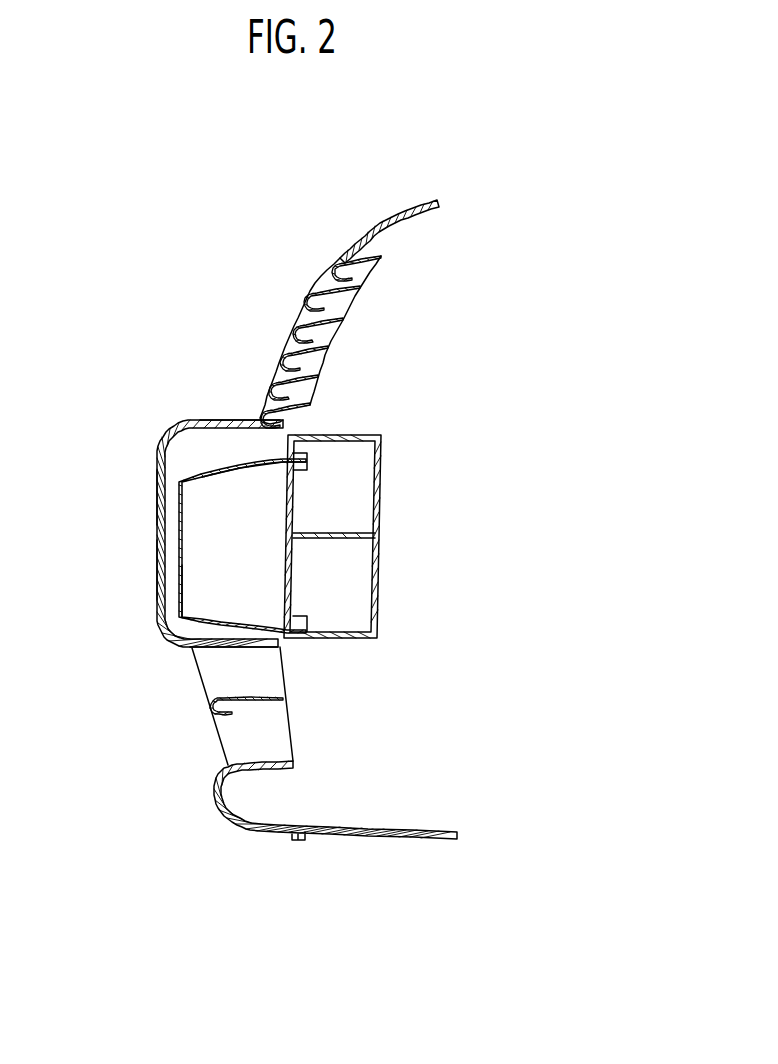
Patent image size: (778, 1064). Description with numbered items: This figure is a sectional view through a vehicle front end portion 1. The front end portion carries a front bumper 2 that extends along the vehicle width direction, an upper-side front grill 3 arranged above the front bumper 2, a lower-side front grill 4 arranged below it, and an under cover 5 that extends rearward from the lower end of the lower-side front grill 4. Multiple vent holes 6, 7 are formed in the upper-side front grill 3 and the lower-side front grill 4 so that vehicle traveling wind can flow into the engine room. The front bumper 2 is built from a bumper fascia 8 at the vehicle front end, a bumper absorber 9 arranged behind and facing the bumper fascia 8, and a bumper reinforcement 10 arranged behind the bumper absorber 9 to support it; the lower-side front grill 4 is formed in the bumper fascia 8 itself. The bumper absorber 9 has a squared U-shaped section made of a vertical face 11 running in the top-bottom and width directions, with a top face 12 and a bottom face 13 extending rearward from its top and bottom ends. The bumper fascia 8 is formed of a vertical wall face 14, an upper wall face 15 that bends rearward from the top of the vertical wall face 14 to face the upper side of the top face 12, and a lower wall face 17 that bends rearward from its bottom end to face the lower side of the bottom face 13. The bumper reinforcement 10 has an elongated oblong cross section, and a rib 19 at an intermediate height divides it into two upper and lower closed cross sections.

The vehicle front end portion 1 is at (116, 239).
The front bumper 2 is at (205, 402).
The upper-side front grill 3 is at (320, 277).
The lower-side front grill 4 is at (225, 718).
The under cover 5 is at (387, 833).
The vent holes 6 is at (291, 334).
The vent holes 7 is at (221, 677).
The bumper fascia 8 is at (157, 497).
The bumper absorber 9 is at (179, 590).
The bumper reinforcement 10 is at (381, 503).
The vertical face 11 is at (182, 532).
The top face 12 is at (250, 462).
The bottom face 13 is at (281, 655).
The vertical wall face 14 is at (162, 563).
The upper wall face 15 is at (245, 417).
The lower wall face 17 is at (212, 648).
The rib 19 is at (353, 540).